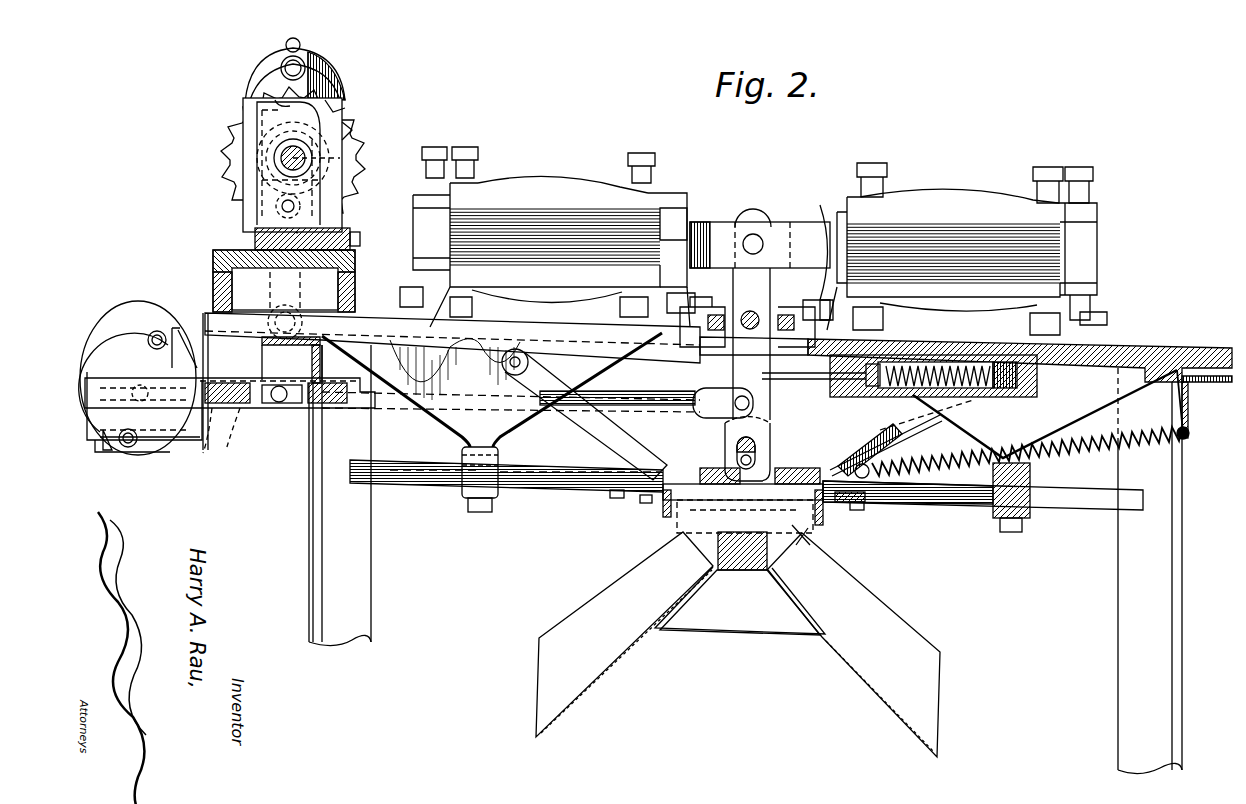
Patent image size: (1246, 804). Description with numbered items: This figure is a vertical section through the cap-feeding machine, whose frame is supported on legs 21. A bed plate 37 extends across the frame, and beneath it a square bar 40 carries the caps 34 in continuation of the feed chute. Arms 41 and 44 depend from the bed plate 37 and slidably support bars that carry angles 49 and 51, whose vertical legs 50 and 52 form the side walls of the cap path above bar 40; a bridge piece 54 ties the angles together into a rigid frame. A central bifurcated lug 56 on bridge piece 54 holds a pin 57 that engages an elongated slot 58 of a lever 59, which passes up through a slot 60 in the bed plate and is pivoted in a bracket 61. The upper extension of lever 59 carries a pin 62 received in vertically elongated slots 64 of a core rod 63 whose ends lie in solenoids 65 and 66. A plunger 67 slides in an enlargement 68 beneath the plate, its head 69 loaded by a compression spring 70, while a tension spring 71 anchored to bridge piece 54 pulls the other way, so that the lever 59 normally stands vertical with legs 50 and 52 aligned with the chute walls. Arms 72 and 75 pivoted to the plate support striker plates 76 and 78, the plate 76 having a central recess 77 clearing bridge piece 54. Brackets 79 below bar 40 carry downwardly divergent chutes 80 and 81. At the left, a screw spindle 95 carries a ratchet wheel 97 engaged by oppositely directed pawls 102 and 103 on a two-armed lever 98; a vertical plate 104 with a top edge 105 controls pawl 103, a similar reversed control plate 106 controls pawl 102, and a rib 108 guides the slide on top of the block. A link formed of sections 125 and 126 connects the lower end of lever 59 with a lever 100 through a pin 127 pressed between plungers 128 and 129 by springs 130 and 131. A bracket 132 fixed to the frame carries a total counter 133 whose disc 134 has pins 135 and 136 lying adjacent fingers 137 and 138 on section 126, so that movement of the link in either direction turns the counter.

The legs 21 is at (360, 588).
The caps 34 is at (795, 542).
The bed plate 37 is at (1148, 348).
The square bar 40 is at (746, 568).
The arm 41 is at (1048, 414).
The arm 44 is at (505, 416).
The angle 49 is at (876, 508).
The vertical leg 50 is at (827, 522).
The angle 51 is at (612, 499).
The vertical leg 52 is at (651, 502).
The bridge piece 54 is at (779, 500).
The bifurcated lug 56 is at (771, 426).
The pin 57 is at (740, 443).
The elongated slot 58 is at (742, 459).
The lever 59 is at (733, 375).
The slot 60 is at (713, 315).
The bracket 61 is at (782, 315).
The pin 62 is at (762, 238).
The core rod 63 is at (707, 222).
The vertically elongated slots 64 is at (752, 222).
The solenoid 65 is at (556, 186).
The solenoid 66 is at (950, 192).
The plunger 67 is at (823, 381).
The enlargement 68 is at (900, 393).
The head 69 is at (864, 397).
The compression spring 70 is at (988, 391).
The tension spring 71 is at (1087, 454).
The arm 72 is at (920, 419).
The arm 75 is at (612, 406).
The striker plate 76 is at (920, 430).
The central recess 77 is at (880, 435).
The striker plate 78 is at (570, 440).
The brackets 79 is at (760, 636).
The chute 80 is at (851, 669).
The chute 81 is at (626, 659).
The screw spindle 95 is at (310, 158).
The ratchet wheel 97 is at (230, 148).
The two-armed lever 98 is at (338, 113).
The lever 100 is at (261, 353).
The pawl 102 is at (317, 56).
The pawl 103 is at (262, 70).
The vertical plate 104 is at (240, 181).
The top edge 105 is at (252, 95).
The control plate 106 is at (345, 132).
The rib 108 is at (255, 237).
The link section 125 is at (395, 405).
The link section 126 is at (260, 412).
The pin 127 is at (280, 386).
The plunger 128 is at (245, 408).
The plunger 129 is at (284, 405).
The spring 130 is at (232, 432).
The spring 131 is at (341, 408).
The bracket 132 is at (150, 452).
The total counter 133 is at (130, 300).
The disc 134 is at (122, 345).
The pin 135 is at (158, 330).
The pin 136 is at (131, 450).
The finger 137 is at (174, 333).
The finger 138 is at (110, 452).